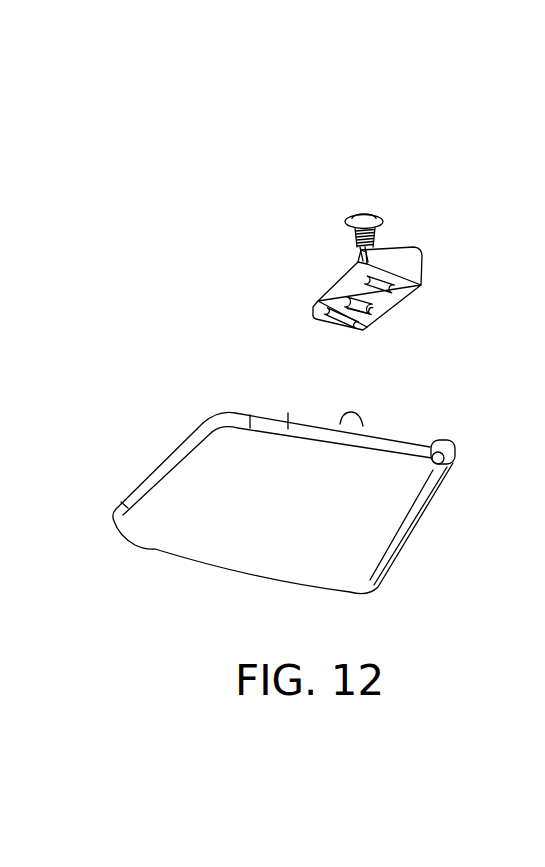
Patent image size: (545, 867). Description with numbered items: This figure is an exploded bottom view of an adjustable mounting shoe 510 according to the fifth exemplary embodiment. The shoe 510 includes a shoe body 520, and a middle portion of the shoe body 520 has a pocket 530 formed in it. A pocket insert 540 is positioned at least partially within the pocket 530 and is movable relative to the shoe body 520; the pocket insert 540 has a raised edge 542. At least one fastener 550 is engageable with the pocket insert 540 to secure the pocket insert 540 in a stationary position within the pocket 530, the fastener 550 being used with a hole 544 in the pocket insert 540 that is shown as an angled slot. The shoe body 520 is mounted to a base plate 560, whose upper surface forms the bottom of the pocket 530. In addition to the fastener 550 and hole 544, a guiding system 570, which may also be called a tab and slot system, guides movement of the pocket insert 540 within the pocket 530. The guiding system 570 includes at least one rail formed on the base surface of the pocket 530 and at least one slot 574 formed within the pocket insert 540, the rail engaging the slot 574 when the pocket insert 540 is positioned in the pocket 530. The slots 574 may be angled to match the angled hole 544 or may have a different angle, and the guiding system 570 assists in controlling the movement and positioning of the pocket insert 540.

The adjustable mounting shoe 510 is at (486, 144).
The shoe body 520 is at (450, 471).
The pocket 530 is at (409, 428).
The pocket insert 540 is at (316, 303).
The raised edge 542 is at (407, 252).
The hole 544 is at (376, 305).
The fastener 550 is at (350, 220).
The base plate 560 is at (170, 530).
The guiding system 570 is at (319, 272).
The slot 574 is at (400, 292).